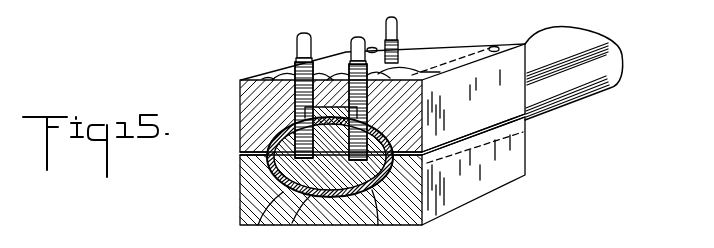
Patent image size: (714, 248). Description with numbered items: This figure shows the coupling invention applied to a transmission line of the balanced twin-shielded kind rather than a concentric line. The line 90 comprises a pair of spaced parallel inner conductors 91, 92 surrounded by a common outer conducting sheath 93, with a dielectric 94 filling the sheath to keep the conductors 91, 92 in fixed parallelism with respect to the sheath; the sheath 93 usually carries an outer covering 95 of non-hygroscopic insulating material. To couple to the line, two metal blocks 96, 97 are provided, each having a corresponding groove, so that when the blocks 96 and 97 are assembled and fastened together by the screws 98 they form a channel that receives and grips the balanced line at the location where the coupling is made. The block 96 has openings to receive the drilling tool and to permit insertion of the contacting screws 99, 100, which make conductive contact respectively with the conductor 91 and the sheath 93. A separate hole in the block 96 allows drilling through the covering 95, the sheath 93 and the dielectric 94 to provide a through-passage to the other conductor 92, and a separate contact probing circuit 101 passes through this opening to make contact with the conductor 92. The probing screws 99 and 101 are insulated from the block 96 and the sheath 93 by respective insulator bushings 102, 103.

The line 90 is at (609, 52).
The inner conductor 91 is at (257, 224).
The inner conductor 92 is at (374, 222).
The outer conducting sheath 93 is at (330, 226).
The dielectric 94 is at (292, 223).
The outer covering 95 is at (276, 172).
The metal block 96 is at (262, 79).
The metal block 97 is at (484, 178).
The screws 98 is at (373, 47).
The contacting screw 99 is at (297, 62).
The contacting screw 100 is at (400, 38).
The contact probing circuit 101 is at (352, 62).
The insulator bushing 102 is at (263, 79).
The insulator bushing 103 is at (437, 80).